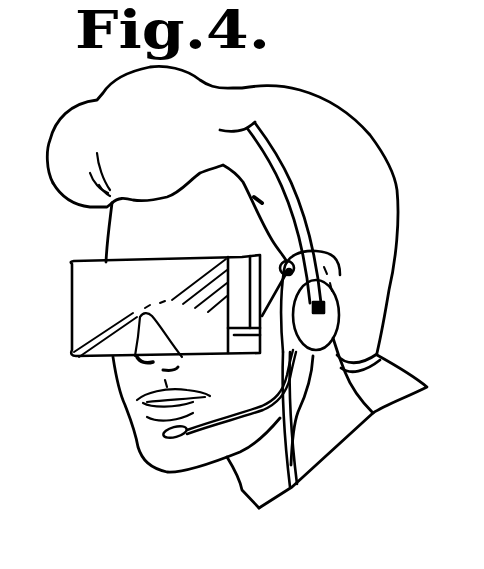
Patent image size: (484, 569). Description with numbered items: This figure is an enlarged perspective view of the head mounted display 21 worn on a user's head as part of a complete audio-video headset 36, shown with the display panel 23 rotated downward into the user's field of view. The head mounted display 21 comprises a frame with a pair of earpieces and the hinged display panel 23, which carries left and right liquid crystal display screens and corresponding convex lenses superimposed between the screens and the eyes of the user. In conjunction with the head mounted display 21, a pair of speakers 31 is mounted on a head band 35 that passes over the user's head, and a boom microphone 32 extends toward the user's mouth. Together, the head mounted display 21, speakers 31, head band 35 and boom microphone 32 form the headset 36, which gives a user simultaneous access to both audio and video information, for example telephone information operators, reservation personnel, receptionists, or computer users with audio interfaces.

The head mounted display 21 is at (78, 310).
The display panel 23 is at (84, 286).
The speakers 31 is at (325, 323).
The boom microphone 32 is at (214, 429).
The head band 35 is at (291, 183).
The audio-video headset 36 is at (66, 368).